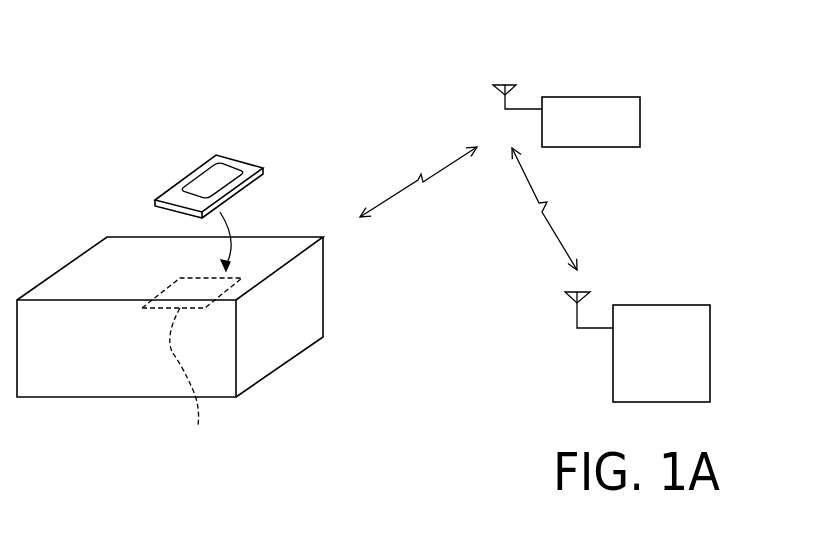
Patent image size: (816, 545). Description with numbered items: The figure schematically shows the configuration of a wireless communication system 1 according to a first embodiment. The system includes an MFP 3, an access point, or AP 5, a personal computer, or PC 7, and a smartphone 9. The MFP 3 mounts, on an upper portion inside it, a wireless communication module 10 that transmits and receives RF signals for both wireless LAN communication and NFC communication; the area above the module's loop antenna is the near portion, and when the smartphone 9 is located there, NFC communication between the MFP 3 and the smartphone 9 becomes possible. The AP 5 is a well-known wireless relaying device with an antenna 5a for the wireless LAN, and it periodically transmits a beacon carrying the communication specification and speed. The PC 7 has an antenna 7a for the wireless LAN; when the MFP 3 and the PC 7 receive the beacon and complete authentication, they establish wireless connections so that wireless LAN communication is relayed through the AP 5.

The wireless communication system 1 is at (208, 47).
The MFP (multi-function peripheral) 3 is at (68, 262).
The access point (AP) 5 is at (640, 108).
The antenna 5a is at (516, 85).
The PC (personal computer) 7 is at (687, 305).
The antenna 7a is at (567, 297).
The smartphone 9 is at (200, 167).
The wireless communication module 10 is at (192, 365).